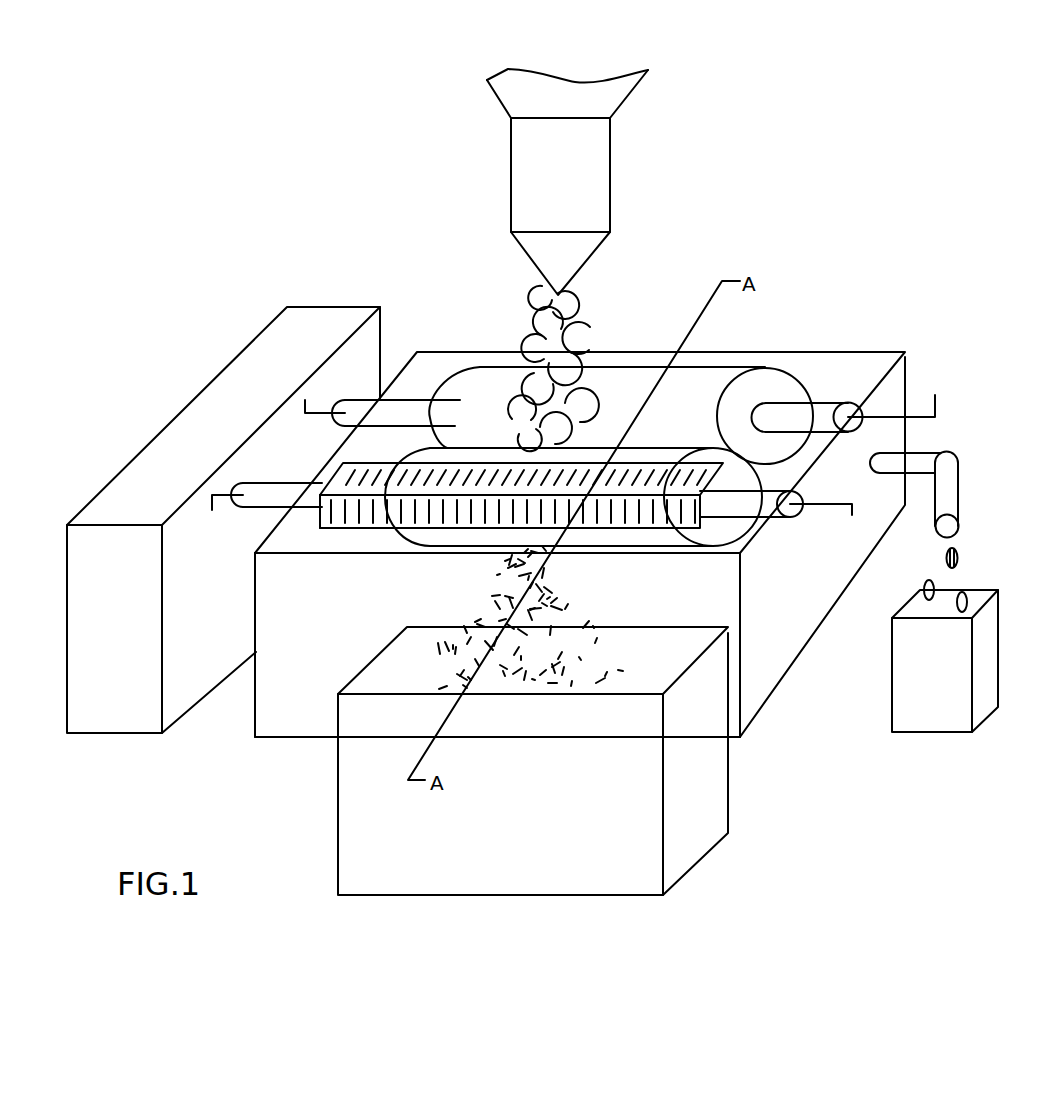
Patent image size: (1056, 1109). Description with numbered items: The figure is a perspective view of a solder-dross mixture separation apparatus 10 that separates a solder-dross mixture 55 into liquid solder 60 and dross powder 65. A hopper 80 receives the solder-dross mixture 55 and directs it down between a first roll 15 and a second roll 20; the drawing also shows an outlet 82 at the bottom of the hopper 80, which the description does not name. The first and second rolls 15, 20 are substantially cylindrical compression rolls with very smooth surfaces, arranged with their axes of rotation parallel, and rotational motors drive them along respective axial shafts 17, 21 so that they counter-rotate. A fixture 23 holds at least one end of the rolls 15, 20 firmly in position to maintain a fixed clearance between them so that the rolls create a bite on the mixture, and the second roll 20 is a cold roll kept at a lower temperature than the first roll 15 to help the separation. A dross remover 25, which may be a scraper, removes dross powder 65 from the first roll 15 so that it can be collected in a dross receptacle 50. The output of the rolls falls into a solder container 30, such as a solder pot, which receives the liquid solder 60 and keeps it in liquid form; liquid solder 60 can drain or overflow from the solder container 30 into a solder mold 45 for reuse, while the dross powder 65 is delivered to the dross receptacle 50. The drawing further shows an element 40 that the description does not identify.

The solder-dross mixture separation apparatus 10 is at (880, 783).
The first roll 15 is at (398, 538).
The axial shaft 17 is at (258, 482).
The second roll 20 is at (800, 378).
The axial shaft 21 is at (347, 398).
The fixture 23 is at (152, 446).
The dross remover 25 is at (318, 524).
The solder container 30 is at (255, 713).
The feed pipe 40 is at (958, 487).
The solder mold 45 is at (892, 675).
The dross receptacle 50 is at (728, 807).
The solder-dross mixture 55 is at (585, 300).
The liquid solder 60 is at (968, 553).
The dross powder 65 is at (578, 582).
The hopper 80 is at (605, 175).
The nozzle 82 is at (590, 258).